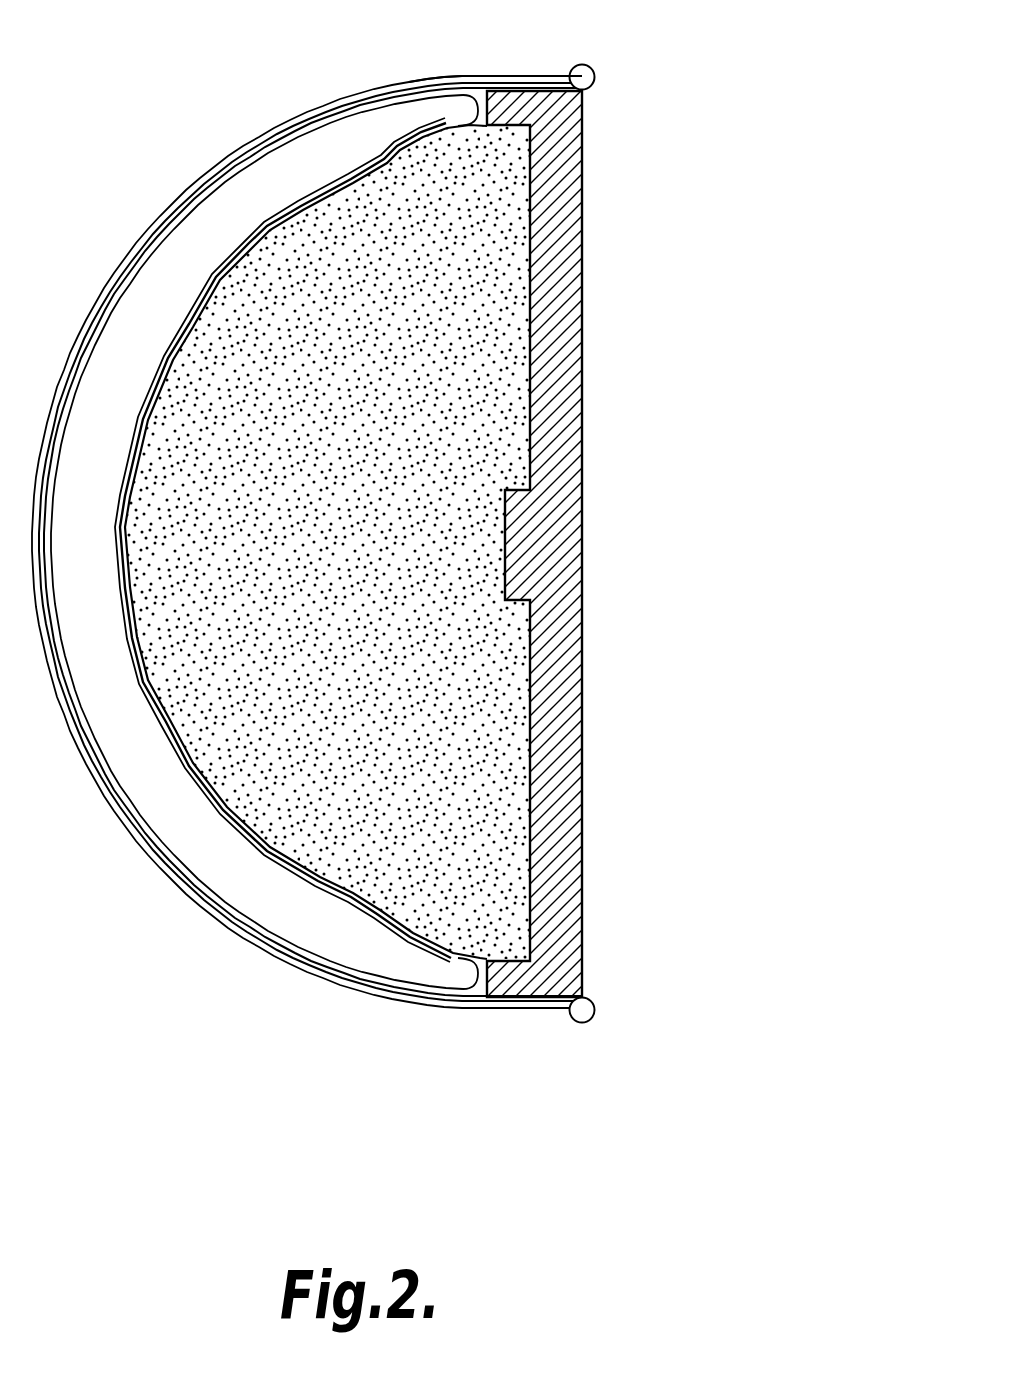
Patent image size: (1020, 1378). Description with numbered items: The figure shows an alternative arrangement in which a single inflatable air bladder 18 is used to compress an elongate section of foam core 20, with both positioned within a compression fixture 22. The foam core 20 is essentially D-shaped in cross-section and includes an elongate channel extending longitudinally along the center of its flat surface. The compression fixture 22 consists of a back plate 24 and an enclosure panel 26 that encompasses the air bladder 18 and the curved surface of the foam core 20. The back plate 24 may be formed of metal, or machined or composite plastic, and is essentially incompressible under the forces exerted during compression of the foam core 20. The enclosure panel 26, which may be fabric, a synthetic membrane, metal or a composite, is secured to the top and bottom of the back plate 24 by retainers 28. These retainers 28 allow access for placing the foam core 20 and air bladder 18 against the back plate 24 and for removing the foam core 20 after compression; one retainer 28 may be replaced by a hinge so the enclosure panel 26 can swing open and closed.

The inflatable air bladder 18 is at (326, 943).
The foam core 20 is at (492, 336).
The compression fixture 22 is at (553, 77).
The back plate 24 is at (572, 470).
The enclosure panel 26 is at (174, 206).
The retainers 28 is at (596, 75).